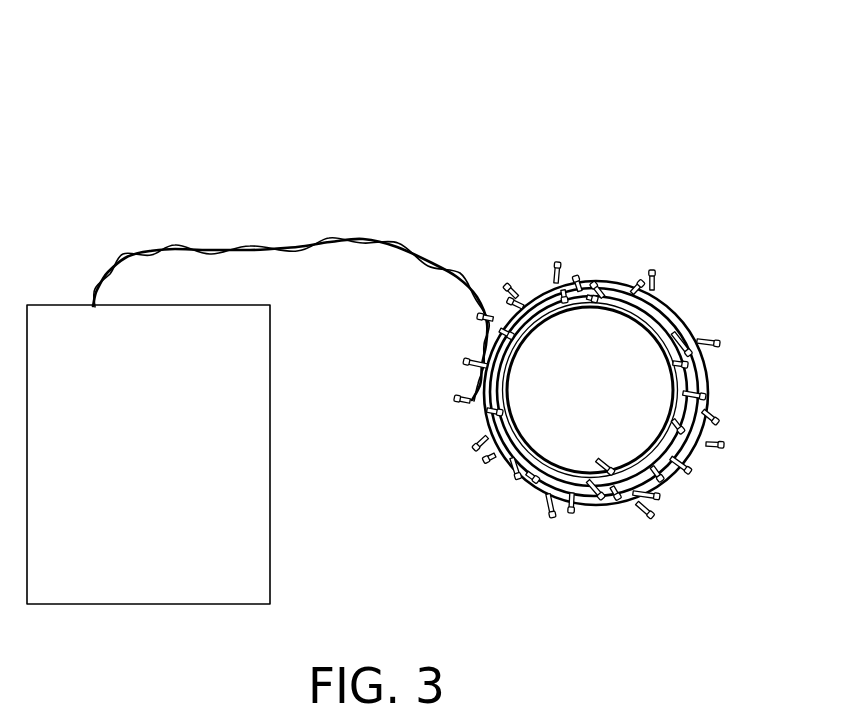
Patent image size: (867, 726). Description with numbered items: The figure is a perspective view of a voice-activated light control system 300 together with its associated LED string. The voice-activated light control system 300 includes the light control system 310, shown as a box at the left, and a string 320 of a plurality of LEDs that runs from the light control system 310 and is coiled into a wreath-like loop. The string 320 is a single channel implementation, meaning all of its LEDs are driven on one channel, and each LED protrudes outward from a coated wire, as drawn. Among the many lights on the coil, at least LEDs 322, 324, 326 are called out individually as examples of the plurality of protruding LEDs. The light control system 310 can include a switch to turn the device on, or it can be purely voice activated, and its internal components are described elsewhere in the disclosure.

The voice-activated light control system 300 is at (606, 103).
The light control system 310 is at (131, 496).
The string 320 is at (252, 246).
The LED 322 is at (558, 260).
The LED 324 is at (652, 270).
The LED 326 is at (723, 342).